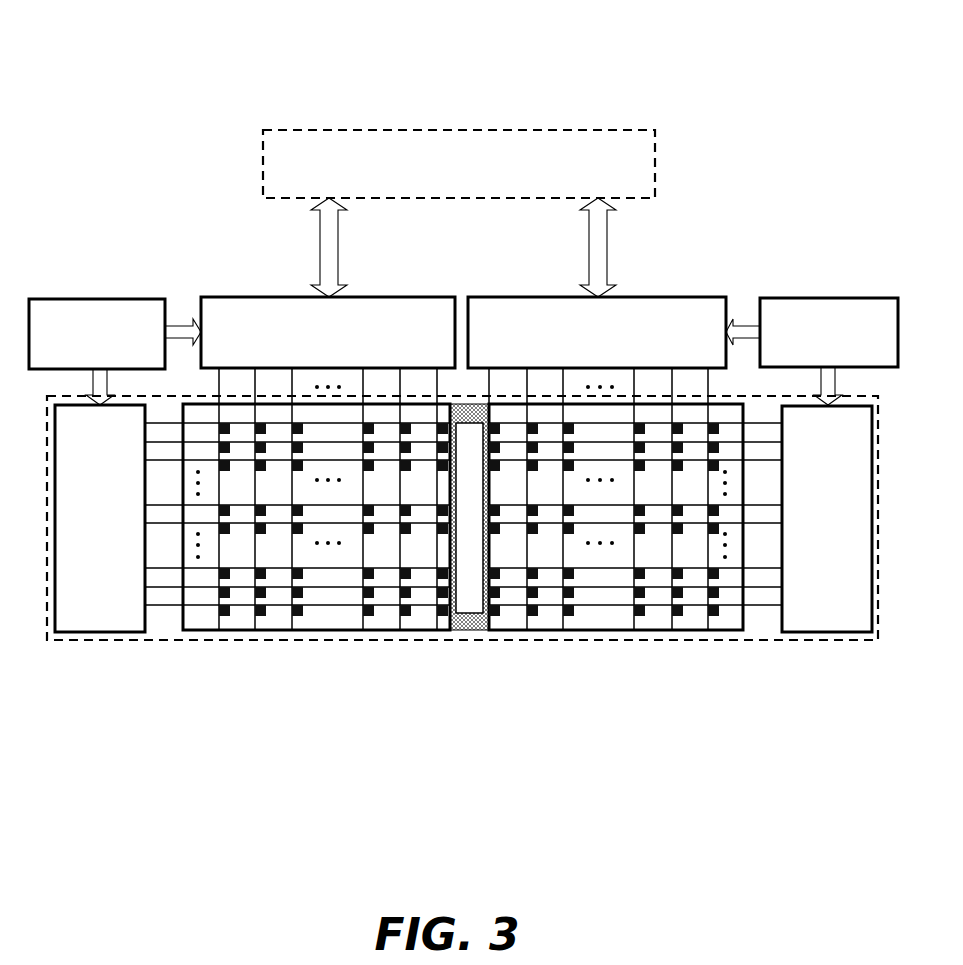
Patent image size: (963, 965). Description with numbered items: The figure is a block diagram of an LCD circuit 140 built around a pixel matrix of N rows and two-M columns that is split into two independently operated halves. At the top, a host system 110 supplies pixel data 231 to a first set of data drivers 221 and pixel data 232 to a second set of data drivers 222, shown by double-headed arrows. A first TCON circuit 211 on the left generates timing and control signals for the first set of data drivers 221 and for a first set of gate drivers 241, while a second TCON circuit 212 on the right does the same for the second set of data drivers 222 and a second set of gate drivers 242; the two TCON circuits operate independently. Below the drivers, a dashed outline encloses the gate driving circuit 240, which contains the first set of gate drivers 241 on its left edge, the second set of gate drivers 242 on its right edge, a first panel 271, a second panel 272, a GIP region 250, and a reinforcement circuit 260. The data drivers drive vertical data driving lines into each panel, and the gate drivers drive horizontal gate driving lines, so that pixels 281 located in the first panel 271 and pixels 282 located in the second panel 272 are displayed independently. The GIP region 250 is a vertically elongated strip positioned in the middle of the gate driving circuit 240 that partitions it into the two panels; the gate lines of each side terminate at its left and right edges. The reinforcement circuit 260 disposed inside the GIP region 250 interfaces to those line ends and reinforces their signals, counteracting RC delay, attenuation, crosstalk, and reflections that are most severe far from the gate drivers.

The LCD circuit 140 is at (188, 84).
The host system 110 is at (459, 164).
The first TCON circuit 211 is at (62, 297).
The second TCON circuit 212 is at (795, 297).
The first set of data drivers 221 is at (252, 297).
The second set of data drivers 222 is at (502, 297).
The pixel data 231 is at (370, 247).
The pixel data 232 is at (644, 247).
The gate driving circuit 240 is at (781, 645).
The first set of gate drivers 241 is at (68, 460).
The second set of gate drivers 242 is at (866, 462).
The GIP region 250 is at (451, 629).
The reinforcement circuit 260 is at (471, 611).
The first panel 271 is at (210, 633).
The second panel 272 is at (716, 634).
The pixels 281 is at (364, 550).
The pixels 282 is at (538, 478).